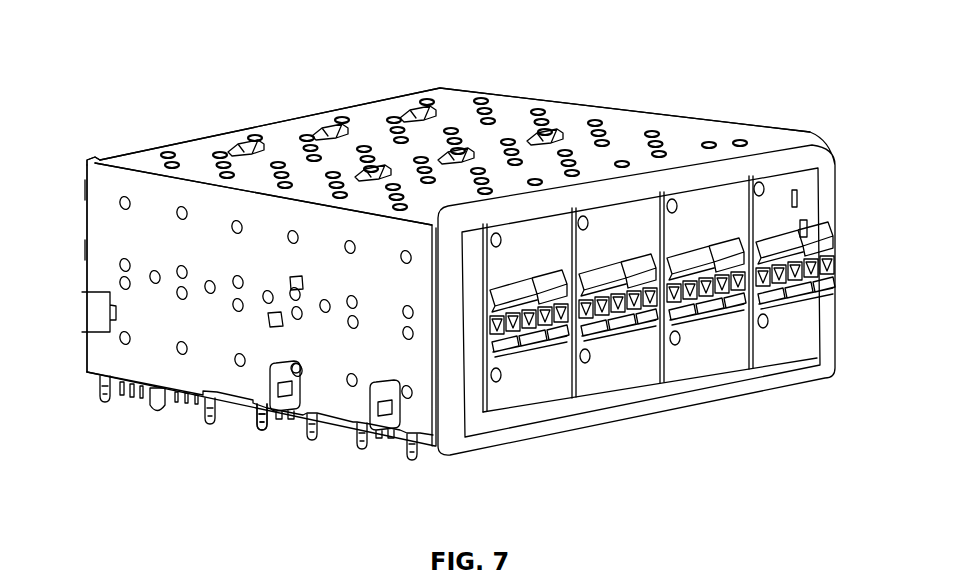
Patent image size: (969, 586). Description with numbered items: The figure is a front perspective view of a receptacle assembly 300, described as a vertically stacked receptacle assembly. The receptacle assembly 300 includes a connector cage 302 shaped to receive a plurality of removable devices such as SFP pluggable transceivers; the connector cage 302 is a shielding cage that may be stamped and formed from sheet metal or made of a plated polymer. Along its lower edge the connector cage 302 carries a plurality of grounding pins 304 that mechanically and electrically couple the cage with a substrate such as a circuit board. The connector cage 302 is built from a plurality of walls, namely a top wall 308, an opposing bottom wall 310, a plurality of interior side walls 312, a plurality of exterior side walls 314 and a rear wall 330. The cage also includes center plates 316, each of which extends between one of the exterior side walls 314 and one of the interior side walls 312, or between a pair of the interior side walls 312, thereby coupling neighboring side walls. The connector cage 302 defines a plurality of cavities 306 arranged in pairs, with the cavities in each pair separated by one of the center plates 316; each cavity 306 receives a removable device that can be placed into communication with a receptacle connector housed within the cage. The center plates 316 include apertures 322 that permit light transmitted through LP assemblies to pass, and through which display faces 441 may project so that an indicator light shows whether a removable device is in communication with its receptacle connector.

The receptacle assembly 300 is at (205, 62).
The connector cage 302 is at (103, 192).
The grounding pins 304 is at (205, 422).
The cavities 306 is at (540, 280).
The top wall 308 is at (430, 135).
The bottom wall 310 is at (244, 414).
The interior side walls 312 is at (543, 240).
The exterior side walls 314 is at (103, 247).
The center plates 316 is at (810, 362).
The apertures 322 is at (750, 340).
The rear wall 330 is at (86, 188).
The display faces 441 is at (773, 340).